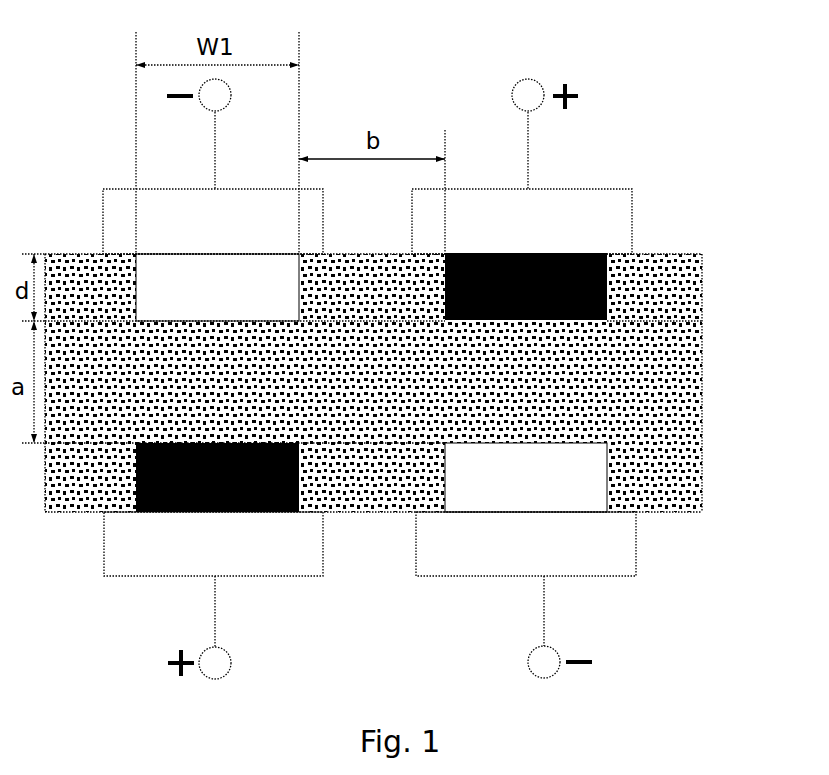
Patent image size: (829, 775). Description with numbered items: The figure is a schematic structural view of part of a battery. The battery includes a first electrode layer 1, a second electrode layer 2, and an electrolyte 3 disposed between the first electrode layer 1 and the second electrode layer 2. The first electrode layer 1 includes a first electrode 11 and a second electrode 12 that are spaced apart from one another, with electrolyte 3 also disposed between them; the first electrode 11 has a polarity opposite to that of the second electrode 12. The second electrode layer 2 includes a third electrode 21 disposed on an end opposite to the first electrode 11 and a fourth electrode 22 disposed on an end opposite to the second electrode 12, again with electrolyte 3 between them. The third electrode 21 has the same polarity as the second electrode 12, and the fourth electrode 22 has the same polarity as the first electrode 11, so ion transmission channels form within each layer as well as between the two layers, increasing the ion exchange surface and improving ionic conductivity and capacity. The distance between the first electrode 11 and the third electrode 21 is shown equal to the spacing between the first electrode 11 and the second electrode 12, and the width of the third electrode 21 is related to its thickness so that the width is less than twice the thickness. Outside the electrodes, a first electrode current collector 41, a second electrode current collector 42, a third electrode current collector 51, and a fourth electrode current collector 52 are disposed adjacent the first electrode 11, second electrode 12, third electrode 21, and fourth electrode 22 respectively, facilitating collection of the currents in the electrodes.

The first electrode layer 1 is at (764, 398).
The second electrode layer 2 is at (757, 220).
The electrolyte 3 is at (415, 413).
The first electrode 11 is at (283, 438).
The second electrode 12 is at (615, 498).
The third electrode 21 is at (283, 326).
The fourth electrode 22 is at (628, 266).
The first electrode current collector 41 is at (165, 565).
The second electrode current collector 42 is at (607, 565).
The third electrode current collector 51 is at (128, 222).
The fourth electrode current collector 52 is at (583, 212).